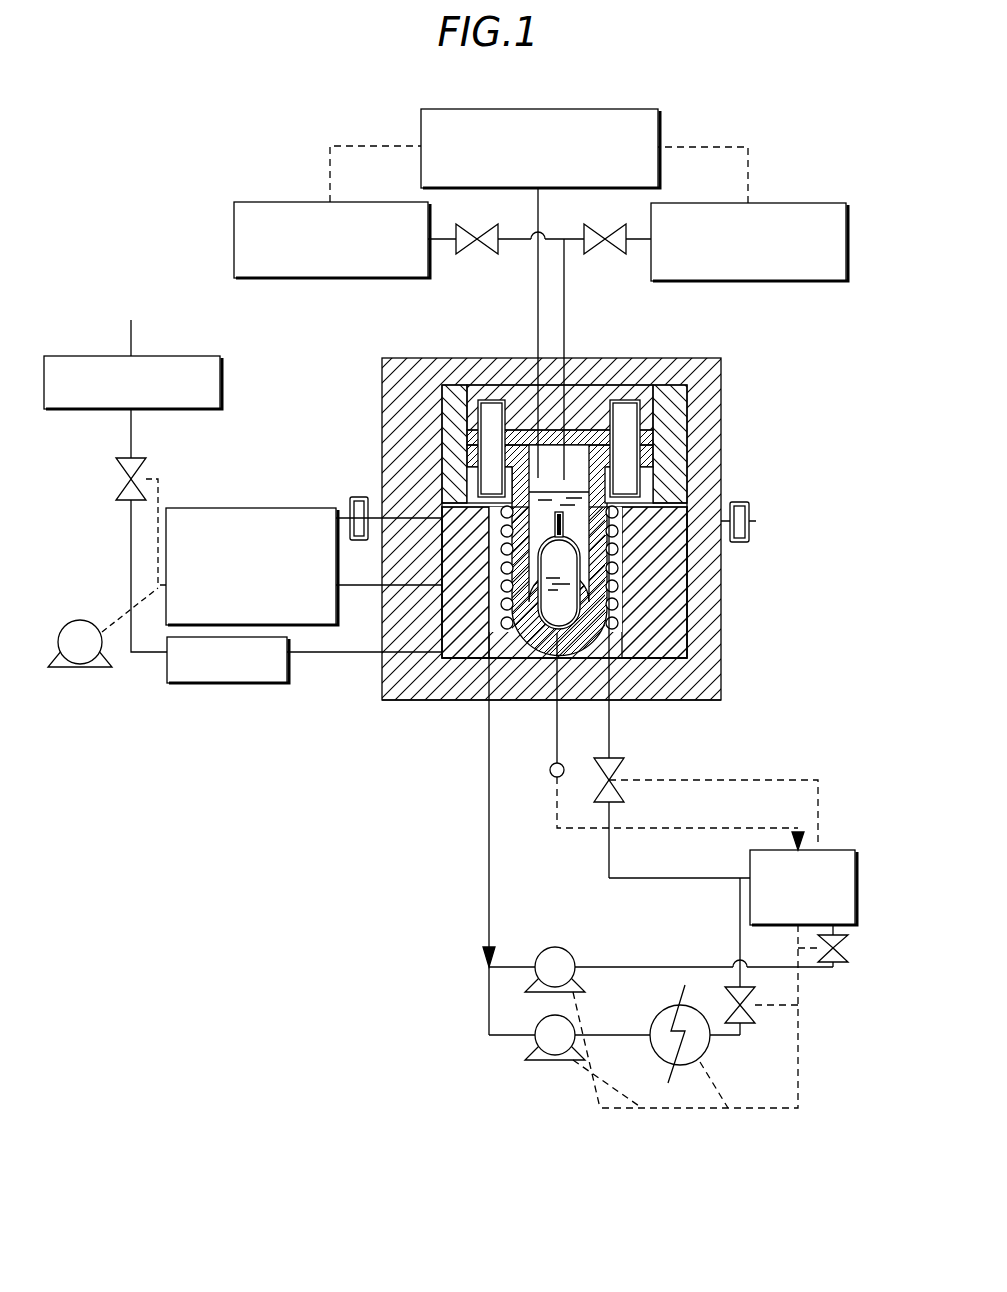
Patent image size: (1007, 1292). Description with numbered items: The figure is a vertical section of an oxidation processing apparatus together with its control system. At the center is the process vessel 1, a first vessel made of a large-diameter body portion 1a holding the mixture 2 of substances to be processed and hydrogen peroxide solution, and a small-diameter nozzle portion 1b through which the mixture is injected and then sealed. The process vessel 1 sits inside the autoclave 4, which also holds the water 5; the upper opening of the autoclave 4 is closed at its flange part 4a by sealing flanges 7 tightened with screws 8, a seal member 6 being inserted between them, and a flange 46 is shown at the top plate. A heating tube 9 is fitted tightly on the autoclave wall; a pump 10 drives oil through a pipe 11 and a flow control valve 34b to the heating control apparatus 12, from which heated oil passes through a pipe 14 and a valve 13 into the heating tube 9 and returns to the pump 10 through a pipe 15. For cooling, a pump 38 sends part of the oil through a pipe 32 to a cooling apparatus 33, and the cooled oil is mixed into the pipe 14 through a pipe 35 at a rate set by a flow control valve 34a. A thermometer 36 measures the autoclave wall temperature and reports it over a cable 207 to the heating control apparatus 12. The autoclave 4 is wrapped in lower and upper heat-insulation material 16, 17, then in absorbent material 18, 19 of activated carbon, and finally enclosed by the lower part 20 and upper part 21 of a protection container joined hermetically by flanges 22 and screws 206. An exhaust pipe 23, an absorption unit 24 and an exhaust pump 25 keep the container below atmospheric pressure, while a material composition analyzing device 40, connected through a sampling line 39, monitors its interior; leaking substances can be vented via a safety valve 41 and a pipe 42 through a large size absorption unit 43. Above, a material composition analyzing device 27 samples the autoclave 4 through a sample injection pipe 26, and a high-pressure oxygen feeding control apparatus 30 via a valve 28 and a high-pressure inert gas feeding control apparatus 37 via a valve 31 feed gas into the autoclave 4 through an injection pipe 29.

The process vessel 1 is at (575, 633).
The body portion 1a is at (566, 527).
The nozzle portion 1b is at (578, 514).
The mixture 2 is at (598, 600).
The autoclave 4 is at (510, 700).
The flange part 4a is at (694, 448).
The water 5 is at (682, 508).
The seal member 6 is at (522, 358).
The sealing flanges 7 is at (482, 358).
The screws 8 is at (632, 386).
The heating tube 9 is at (618, 626).
The pump 10 is at (553, 947).
The pipe 11 is at (628, 967).
The heating control apparatus 12 is at (835, 850).
The valve 13 is at (622, 770).
The pipe 14 is at (693, 878).
The pipe 15 is at (488, 812).
The heat-insulation material 16 is at (462, 560).
The heat-insulation material 17 is at (442, 432).
The absorbent material 18 is at (395, 690).
The absorbent material 19 is at (408, 462).
The lower part 20 is at (445, 700).
The upper part 21 is at (416, 358).
The flanges 22 is at (756, 521).
The exhaust pipe 23 is at (350, 653).
The absorption unit 24 is at (187, 684).
The exhaust pump 25 is at (83, 620).
The sample injection pipe 26 is at (538, 277).
The material composition analyzing device 27 is at (548, 109).
The valve 28 is at (615, 235).
The injection pipe 29 is at (564, 287).
The high-pressure oxygen feeding control apparatus 30 is at (812, 203).
The valve 31 is at (487, 235).
The pipe 32 is at (488, 1004).
The cooling apparatus 33 is at (661, 1060).
The flow control valve 34a is at (756, 1002).
The flow control valve 34b is at (836, 949).
The pipe 35 is at (740, 932).
The thermometer 36 is at (553, 742).
The high-pressure inert gas feeding control apparatus 37 is at (272, 202).
The pump 38 is at (548, 1062).
The sampling line 39 is at (387, 587).
The material composition analyzing device 40 is at (245, 508).
The safety valve 41 is at (148, 466).
The pipe 42 is at (133, 433).
The large size absorption unit 43 is at (216, 362).
The flange 46 is at (616, 358).
The screws 206 is at (752, 506).
The cable 207 is at (627, 828).